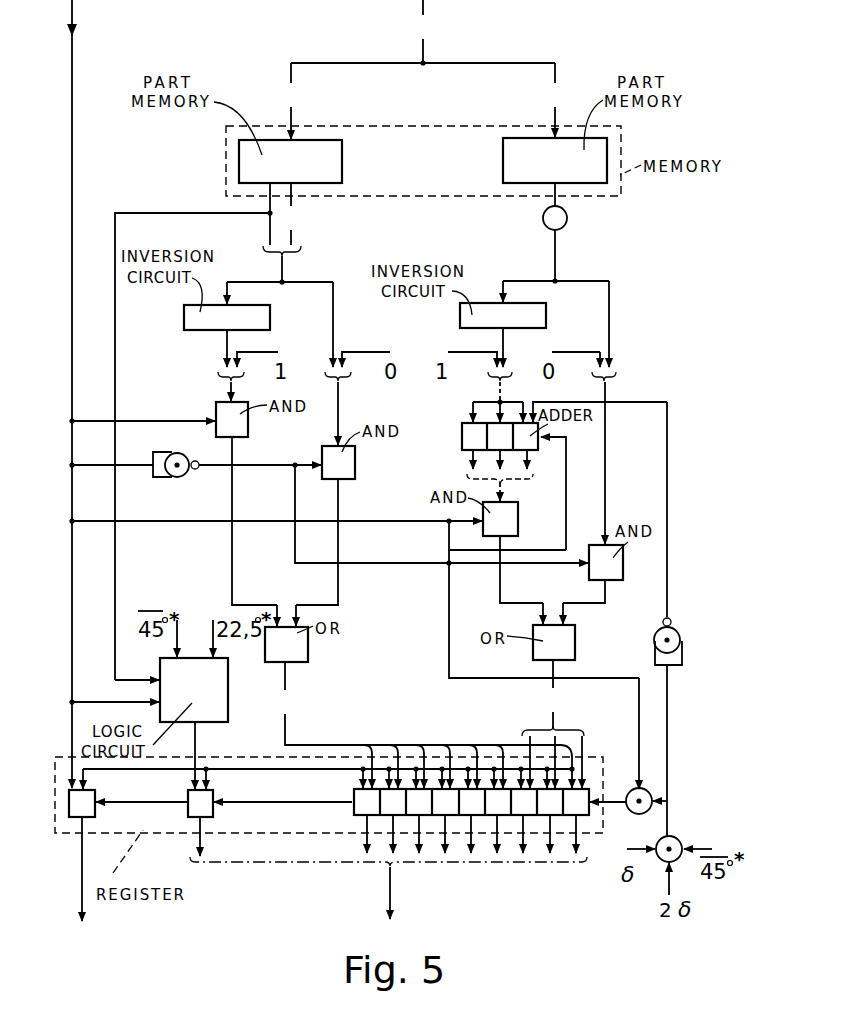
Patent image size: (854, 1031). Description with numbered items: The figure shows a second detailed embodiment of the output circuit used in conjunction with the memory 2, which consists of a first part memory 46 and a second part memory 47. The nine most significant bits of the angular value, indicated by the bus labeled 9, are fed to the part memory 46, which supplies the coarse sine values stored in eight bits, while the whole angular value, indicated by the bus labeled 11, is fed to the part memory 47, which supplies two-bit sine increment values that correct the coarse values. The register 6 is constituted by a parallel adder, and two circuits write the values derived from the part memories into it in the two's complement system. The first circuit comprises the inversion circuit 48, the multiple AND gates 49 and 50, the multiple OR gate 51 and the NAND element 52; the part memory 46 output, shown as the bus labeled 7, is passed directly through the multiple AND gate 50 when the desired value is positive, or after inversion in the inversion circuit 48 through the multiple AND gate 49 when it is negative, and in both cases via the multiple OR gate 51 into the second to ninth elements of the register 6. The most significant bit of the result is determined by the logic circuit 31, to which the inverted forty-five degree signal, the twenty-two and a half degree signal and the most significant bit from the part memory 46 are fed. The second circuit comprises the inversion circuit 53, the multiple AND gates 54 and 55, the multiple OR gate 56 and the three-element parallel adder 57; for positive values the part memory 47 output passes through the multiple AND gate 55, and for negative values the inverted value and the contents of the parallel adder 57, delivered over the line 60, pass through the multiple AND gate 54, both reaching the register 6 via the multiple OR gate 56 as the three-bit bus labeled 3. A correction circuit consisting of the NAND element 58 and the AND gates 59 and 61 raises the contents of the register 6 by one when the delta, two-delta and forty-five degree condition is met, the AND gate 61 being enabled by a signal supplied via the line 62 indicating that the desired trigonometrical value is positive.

The memory 2 is at (423, 161).
The register 6 is at (329, 833).
The logic circuit 31 is at (224, 710).
The first part memory 46 is at (335, 167).
The second part memory 47 is at (513, 163).
The inversion circuit 48 is at (268, 318).
The multiple AND gate 49 is at (247, 425).
The multiple AND gate 50 is at (354, 468).
The multiple OR gate 51 is at (305, 650).
The NAND element 52 is at (181, 474).
The inversion circuit 53 is at (545, 318).
The multiple AND gate 54 is at (517, 523).
The multiple AND gate 55 is at (620, 568).
The multiple OR gate 56 is at (573, 646).
The parallel adder 57 is at (463, 441).
The NAND element 58 is at (687, 633).
The AND gate 59 is at (672, 839).
The line 60 is at (544, 613).
The AND gate 61 is at (641, 816).
The line 62 is at (623, 719).
The signal line 3 is at (553, 724).
The signal line 7 is at (291, 214).
The signal line 9 is at (422, 416).
The signal line 11 is at (430, 76).